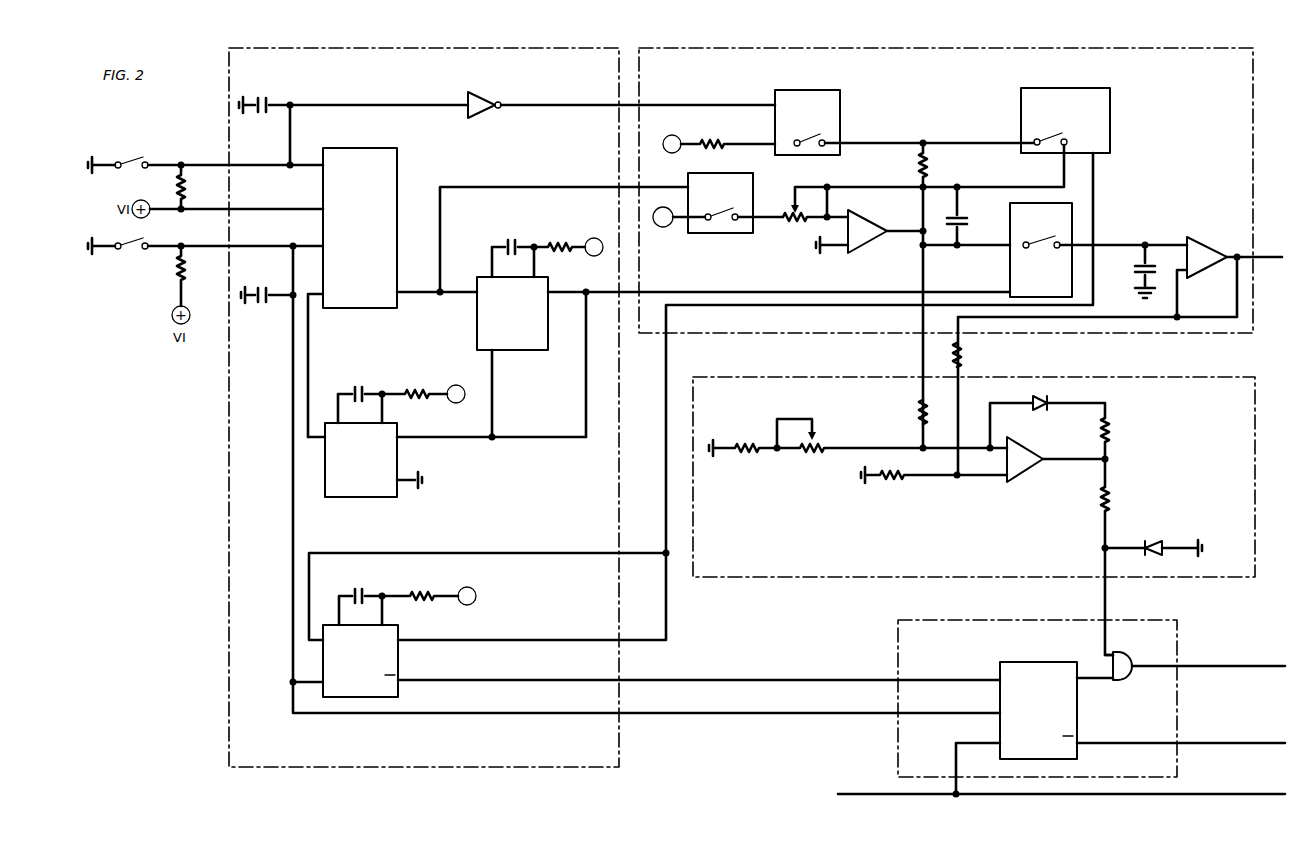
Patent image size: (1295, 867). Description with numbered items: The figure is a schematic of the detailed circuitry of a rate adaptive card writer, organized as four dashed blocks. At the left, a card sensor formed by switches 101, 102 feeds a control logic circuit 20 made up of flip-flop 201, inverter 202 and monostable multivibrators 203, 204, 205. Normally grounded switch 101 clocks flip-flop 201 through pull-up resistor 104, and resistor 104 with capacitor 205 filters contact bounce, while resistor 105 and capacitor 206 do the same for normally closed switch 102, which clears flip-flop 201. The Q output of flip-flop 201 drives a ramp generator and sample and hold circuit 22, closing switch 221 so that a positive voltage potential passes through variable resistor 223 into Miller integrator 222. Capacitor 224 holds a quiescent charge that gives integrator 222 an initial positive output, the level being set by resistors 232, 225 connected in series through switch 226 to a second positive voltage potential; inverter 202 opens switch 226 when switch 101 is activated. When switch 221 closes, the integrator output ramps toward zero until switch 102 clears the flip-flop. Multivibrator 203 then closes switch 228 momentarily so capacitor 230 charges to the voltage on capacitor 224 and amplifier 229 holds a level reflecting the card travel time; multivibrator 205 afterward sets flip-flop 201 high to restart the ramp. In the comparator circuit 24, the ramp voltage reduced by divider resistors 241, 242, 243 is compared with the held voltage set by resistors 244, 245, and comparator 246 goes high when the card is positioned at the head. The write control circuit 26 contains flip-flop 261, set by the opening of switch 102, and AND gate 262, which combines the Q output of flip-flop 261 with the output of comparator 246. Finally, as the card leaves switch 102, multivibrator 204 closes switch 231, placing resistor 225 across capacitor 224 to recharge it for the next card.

The control logic circuit 20 is at (424, 407).
The ramp generator and sample and hold circuit 22 is at (946, 190).
The comparator circuit 24 is at (974, 477).
The write control circuit 26 is at (1037, 698).
The switch 101 is at (134, 158).
The switch 102 is at (134, 255).
The resistor 104 is at (197, 187).
The resistor 105 is at (197, 275).
The flip-flop 201 is at (371, 146).
The inverter 202 is at (621, 113).
The monostable multivibrator 203 is at (522, 338).
The monostable multivibrator 204 is at (390, 658).
The capacitor / monostable multivibrator 205 is at (362, 504).
The capacitor 206 is at (269, 304).
The switch 221 is at (722, 233).
The Miller integrator 222 is at (869, 236).
The variable resistor 223 is at (814, 215).
The capacitor 224 is at (972, 218).
The resistor 225 is at (939, 164).
The switch 226 is at (840, 126).
The switch 228 is at (1010, 278).
The amplifier 229 is at (1120, 347).
The capacitor 230 is at (1131, 270).
The switch 231 is at (1110, 128).
The resistor 232 is at (718, 135).
The divider resistor 241 is at (910, 426).
The divider resistor 242 is at (891, 448).
The divider resistor 243 is at (743, 458).
The resistor 244 is at (974, 355).
The resistor 245 is at (934, 485).
The comparator 246 is at (1095, 525).
The flip-flop 261 is at (1070, 722).
The AND gate 262 is at (1195, 658).